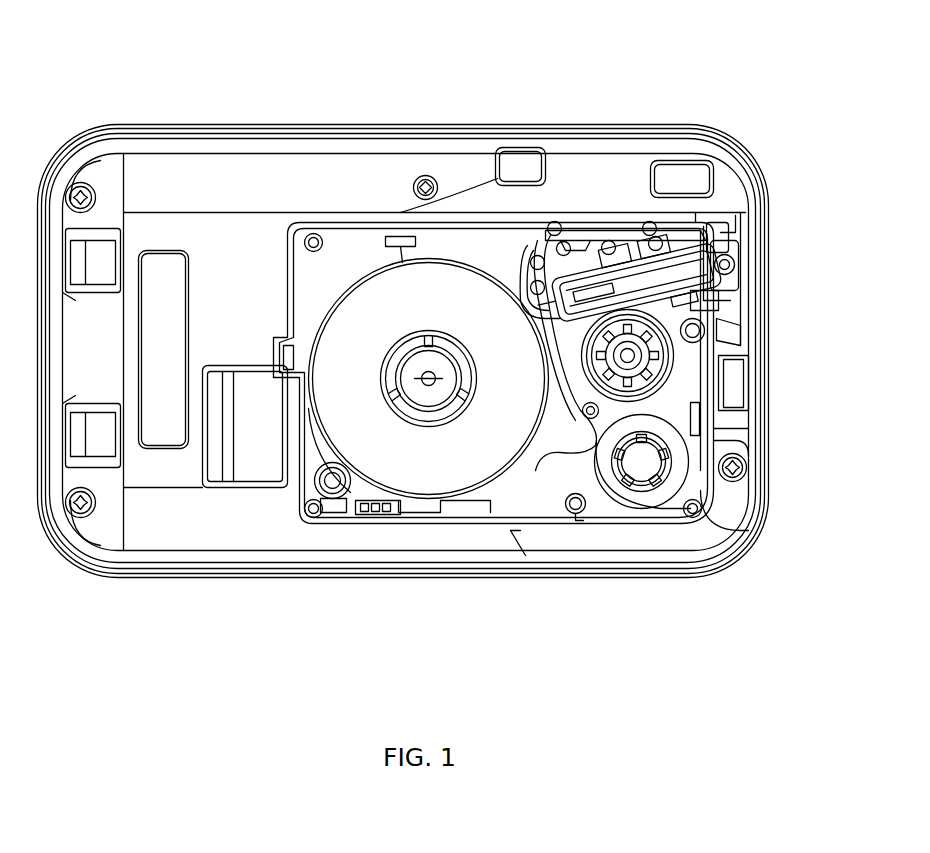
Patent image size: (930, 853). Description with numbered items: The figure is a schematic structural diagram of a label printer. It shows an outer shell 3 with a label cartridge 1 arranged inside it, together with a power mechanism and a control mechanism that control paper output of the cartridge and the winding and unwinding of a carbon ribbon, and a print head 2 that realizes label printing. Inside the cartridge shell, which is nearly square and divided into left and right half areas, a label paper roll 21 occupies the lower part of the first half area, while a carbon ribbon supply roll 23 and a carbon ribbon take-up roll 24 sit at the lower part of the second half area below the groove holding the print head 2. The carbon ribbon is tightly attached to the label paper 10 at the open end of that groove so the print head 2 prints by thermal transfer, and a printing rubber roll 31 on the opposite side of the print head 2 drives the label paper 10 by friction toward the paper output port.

The label cartridge 1 is at (487, 493).
The print head 2 is at (636, 278).
The outer shell 3 is at (235, 125).
The label paper 10 is at (525, 272).
The label paper roll 21 is at (397, 457).
The carbon ribbon supply roll 23 is at (624, 490).
The carbon ribbon take-up roll 24 is at (595, 413).
The printing rubber roll 31 is at (717, 217).